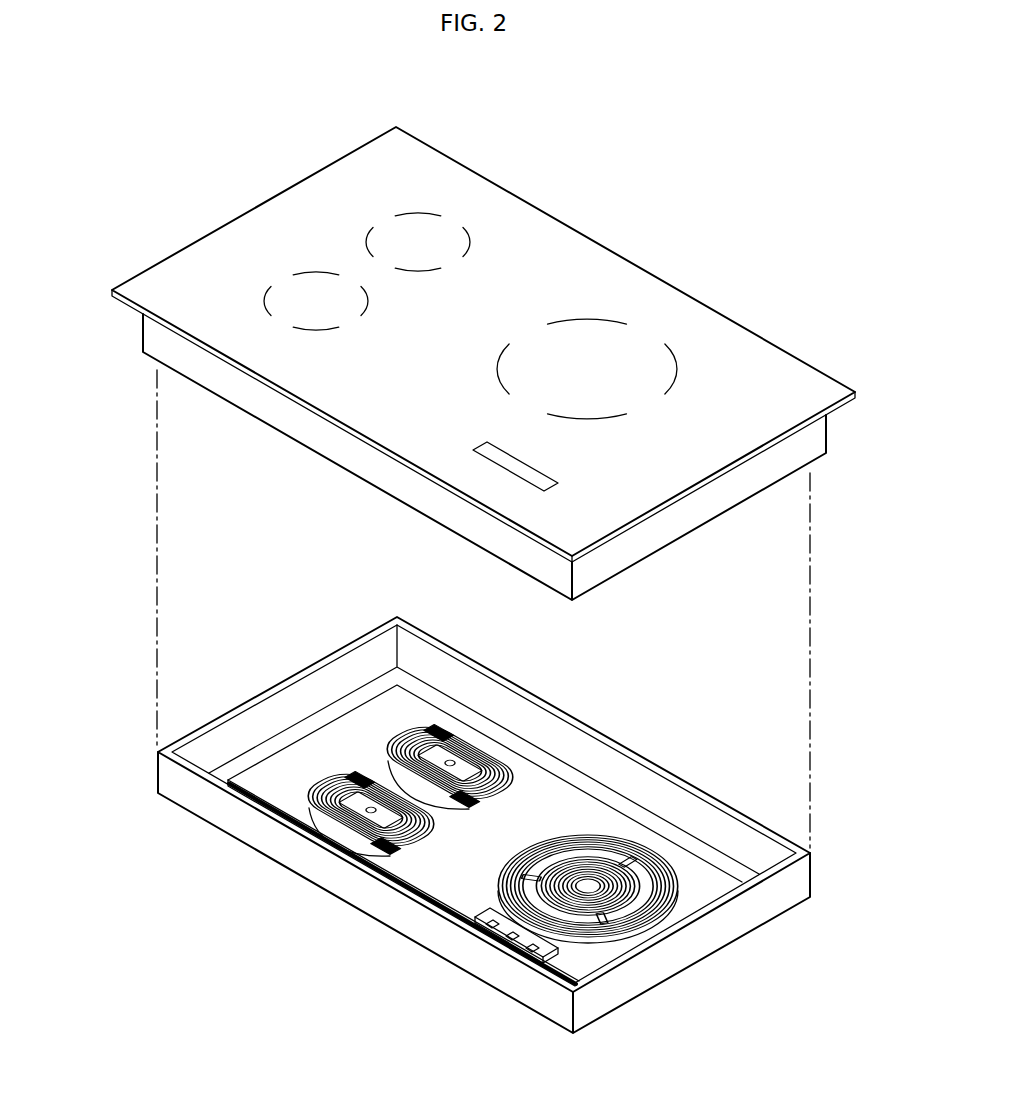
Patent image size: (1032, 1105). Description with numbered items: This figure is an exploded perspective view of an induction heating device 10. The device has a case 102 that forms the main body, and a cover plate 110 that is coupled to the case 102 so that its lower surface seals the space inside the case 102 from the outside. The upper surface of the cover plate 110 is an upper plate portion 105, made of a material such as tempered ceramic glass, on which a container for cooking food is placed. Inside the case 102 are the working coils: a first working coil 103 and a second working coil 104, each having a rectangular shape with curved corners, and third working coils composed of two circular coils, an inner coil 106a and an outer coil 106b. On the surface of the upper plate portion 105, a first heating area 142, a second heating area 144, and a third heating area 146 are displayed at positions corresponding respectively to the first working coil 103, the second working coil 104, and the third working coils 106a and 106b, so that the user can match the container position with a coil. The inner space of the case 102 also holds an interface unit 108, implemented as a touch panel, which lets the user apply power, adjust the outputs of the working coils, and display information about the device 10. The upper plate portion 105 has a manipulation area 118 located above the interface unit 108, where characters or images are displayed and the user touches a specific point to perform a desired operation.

The induction heating device 10 is at (686, 210).
The cover plate 110 is at (143, 331).
The upper plate portion 105 is at (797, 435).
The second heating area 144 is at (318, 270).
The first heating area 142 is at (420, 208).
The third heating area 146 is at (672, 357).
The manipulation area 118 is at (553, 487).
The case 102 is at (358, 893).
The first working coil 103 is at (413, 742).
The second working coil 104 is at (332, 790).
The inner coil 106a is at (622, 893).
The outer coil 106b is at (605, 906).
The interface unit 108 is at (542, 957).